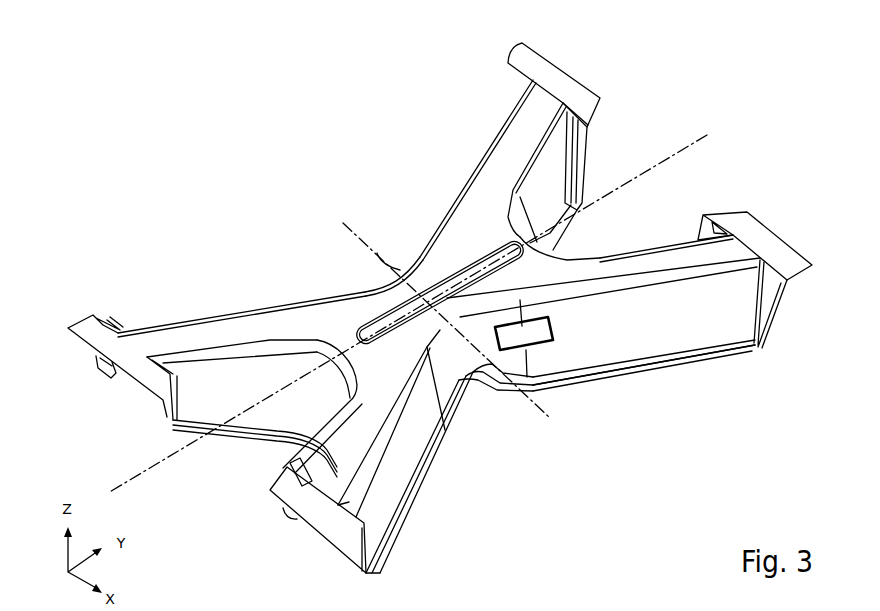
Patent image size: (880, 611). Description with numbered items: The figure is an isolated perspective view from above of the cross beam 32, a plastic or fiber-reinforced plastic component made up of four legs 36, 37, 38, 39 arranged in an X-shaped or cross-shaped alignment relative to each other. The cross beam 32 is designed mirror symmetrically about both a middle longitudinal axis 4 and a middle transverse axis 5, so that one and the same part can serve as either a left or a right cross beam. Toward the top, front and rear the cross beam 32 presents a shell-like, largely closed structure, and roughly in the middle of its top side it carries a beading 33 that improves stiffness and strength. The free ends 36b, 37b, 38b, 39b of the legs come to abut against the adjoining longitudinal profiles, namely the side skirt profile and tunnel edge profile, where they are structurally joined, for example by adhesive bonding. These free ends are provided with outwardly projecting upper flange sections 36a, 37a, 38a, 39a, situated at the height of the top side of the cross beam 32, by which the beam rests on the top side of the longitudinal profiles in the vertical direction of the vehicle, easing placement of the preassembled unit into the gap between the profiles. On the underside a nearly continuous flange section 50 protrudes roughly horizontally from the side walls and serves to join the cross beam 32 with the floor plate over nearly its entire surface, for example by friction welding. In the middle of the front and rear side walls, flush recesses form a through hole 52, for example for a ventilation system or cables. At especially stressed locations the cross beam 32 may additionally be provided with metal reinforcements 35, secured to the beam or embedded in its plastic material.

The cross beam 32 is at (315, 156).
The middle longitudinal axis 4 is at (377, 253).
The middle transverse axis 5 is at (290, 383).
The beading 33 is at (437, 277).
The metal reinforcements 35 is at (556, 330).
The leg 36 is at (196, 352).
The flange section 36a is at (88, 337).
The free end 36b is at (117, 396).
The leg 37 is at (552, 132).
The flange section 37a is at (577, 78).
The free end 37b is at (607, 135).
The leg 38 is at (372, 477).
The flange section 38a is at (315, 507).
The free end 38b is at (301, 539).
The leg 39 is at (662, 270).
The flange section 39a is at (772, 240).
The free end 39b is at (792, 307).
The flange section 50 is at (674, 352).
The through hole 52 is at (494, 406).